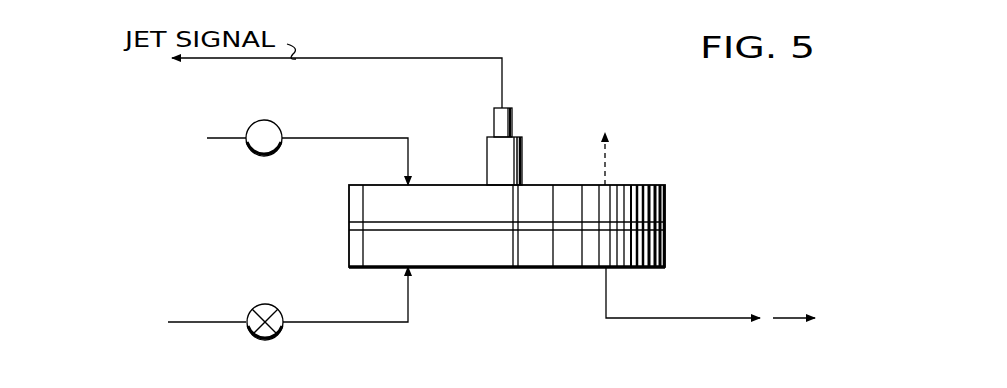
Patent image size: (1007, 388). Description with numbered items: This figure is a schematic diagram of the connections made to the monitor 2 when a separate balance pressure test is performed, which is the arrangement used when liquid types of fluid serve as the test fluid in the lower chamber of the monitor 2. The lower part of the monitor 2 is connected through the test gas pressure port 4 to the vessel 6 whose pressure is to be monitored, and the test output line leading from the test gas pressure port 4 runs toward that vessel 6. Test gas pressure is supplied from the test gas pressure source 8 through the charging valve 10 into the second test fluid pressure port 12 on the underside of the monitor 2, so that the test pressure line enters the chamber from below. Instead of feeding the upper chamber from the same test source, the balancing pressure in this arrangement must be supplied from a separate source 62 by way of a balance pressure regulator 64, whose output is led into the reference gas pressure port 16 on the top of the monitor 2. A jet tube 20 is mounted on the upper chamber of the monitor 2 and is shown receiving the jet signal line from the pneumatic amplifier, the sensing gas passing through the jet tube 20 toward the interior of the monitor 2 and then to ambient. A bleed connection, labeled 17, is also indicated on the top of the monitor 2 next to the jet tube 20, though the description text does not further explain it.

The monitor 2 is at (682, 190).
The test gas pressure port 4 is at (598, 272).
The vessel 6 is at (737, 317).
The test gas pressure source 8 is at (137, 322).
The charging valve 10 is at (253, 305).
The second test fluid pressure port 12 is at (411, 270).
The reference gas pressure port 16 is at (413, 183).
The bleed port 17 is at (600, 170).
The jet tube 20 is at (515, 126).
The separate source 62 is at (160, 138).
The balance pressure regulator 64 is at (243, 148).